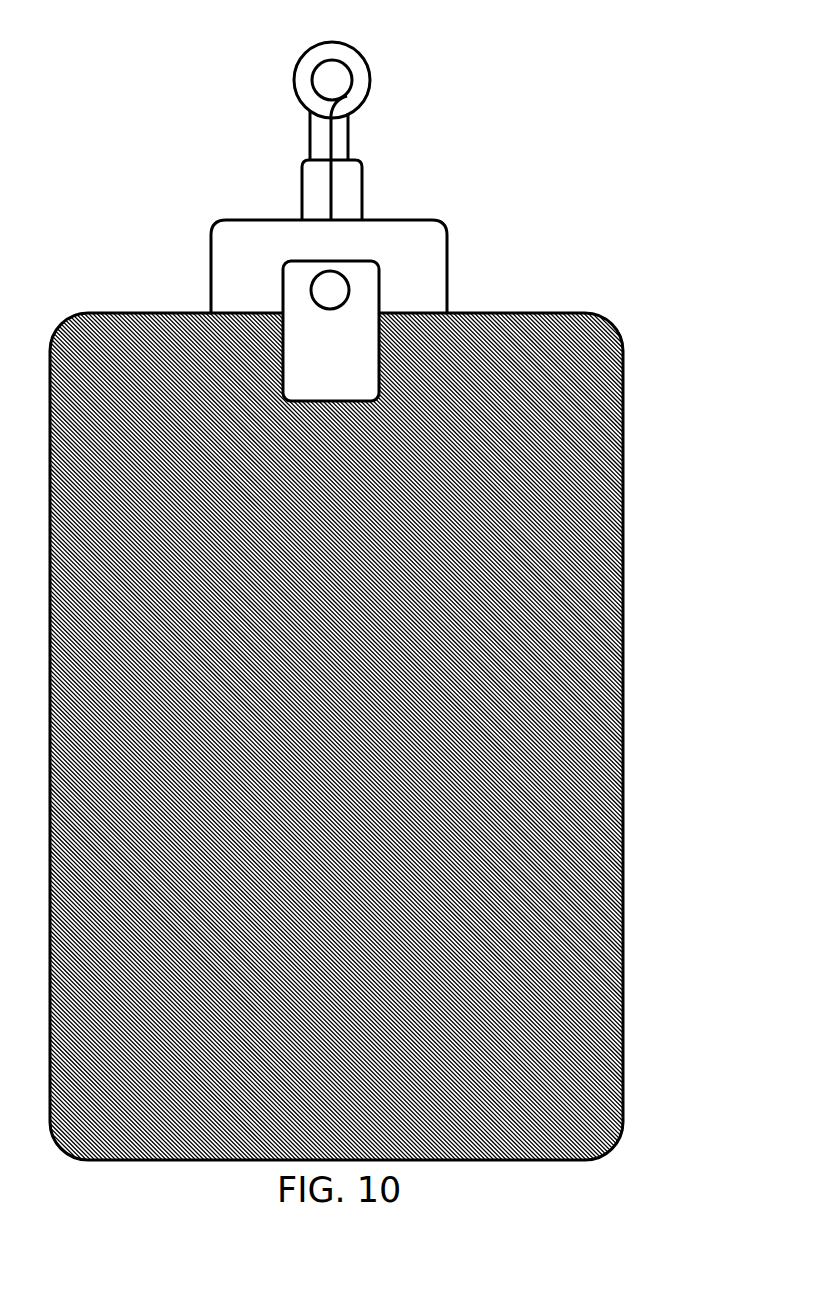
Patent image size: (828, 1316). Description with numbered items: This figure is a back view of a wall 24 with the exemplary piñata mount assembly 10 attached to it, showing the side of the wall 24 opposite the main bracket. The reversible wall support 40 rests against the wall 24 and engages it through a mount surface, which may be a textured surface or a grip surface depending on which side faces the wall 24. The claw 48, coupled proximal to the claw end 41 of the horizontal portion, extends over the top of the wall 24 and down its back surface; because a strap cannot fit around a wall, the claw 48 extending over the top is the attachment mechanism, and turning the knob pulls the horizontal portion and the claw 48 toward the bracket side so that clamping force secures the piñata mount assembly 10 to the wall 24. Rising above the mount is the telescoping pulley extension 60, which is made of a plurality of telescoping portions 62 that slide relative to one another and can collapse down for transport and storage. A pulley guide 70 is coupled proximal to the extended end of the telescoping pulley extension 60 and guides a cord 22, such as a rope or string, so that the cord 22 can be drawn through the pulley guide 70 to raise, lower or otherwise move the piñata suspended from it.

The piñata mount assembly 10 is at (533, 178).
The cord 22 is at (332, 148).
The wall 24 is at (593, 609).
The reversible wall support 40 is at (228, 259).
The claw end 41 is at (333, 297).
The claw 48 is at (343, 337).
The telescoping pulley extension 60 is at (342, 187).
The telescoping portion 62 is at (322, 136).
The pulley guide 70 is at (350, 60).